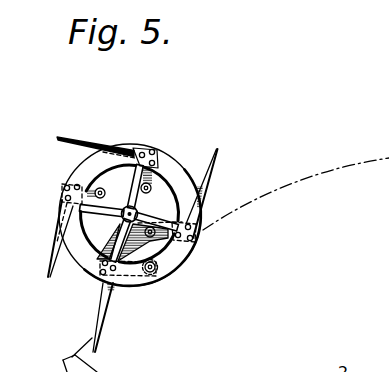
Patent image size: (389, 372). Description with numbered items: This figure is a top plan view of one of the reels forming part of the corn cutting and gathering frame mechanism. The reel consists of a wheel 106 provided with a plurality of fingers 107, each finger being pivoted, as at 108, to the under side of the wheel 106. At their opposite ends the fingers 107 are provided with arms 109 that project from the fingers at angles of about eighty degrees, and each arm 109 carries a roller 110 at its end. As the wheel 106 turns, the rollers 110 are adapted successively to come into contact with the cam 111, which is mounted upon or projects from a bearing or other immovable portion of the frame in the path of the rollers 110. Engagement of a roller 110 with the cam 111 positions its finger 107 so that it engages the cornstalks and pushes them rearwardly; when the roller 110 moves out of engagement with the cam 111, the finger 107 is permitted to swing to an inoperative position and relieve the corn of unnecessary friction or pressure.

The wheel 106 is at (167, 161).
The fingers 107 is at (131, 238).
The pivot 108 is at (65, 199).
The arms 109 is at (170, 238).
The rollers 110 is at (98, 187).
The cam 111 is at (108, 230).